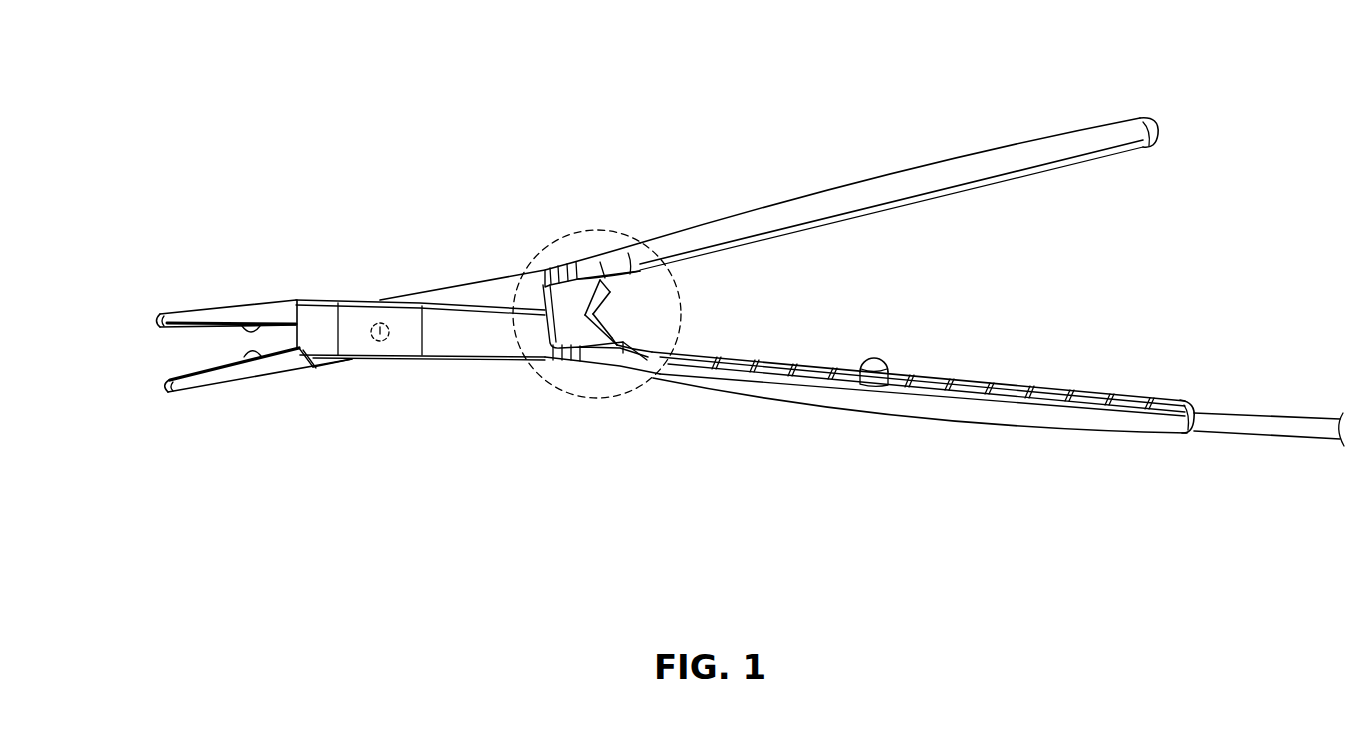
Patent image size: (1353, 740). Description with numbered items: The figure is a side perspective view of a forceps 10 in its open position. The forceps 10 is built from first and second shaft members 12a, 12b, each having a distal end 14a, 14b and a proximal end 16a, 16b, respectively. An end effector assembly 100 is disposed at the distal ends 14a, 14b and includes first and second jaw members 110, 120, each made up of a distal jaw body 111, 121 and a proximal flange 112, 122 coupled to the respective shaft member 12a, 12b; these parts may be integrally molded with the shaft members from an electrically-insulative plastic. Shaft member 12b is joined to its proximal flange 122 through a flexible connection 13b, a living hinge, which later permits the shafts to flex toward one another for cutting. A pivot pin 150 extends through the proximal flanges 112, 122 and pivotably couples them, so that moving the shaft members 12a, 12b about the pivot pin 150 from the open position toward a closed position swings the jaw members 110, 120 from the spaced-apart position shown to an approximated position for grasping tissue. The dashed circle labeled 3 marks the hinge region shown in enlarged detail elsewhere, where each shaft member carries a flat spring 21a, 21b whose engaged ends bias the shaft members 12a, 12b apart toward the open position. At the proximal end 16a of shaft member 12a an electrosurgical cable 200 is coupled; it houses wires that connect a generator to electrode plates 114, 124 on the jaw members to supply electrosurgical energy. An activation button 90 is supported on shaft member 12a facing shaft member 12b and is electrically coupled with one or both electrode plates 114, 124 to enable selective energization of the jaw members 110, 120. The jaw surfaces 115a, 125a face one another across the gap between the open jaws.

The forceps 10 is at (677, 116).
The first shaft member 12a is at (932, 432).
The second shaft member 12b is at (829, 164).
The flexible connection 13b is at (553, 270).
The distal end of first shaft member 14a is at (613, 373).
The distal end of second shaft member 14b is at (600, 260).
The proximal end of first shaft member 16a is at (1168, 428).
The proximal end of second shaft member 16b is at (1125, 122).
The first flat spring 21a is at (607, 323).
The second flat spring 21b is at (607, 295).
The activation button 90 is at (873, 353).
The end effector assembly 100 is at (342, 246).
The first jaw member 110 is at (137, 314).
The distal jaw body of first jaw member 111 is at (182, 306).
The proximal flange of first jaw member 112 is at (432, 335).
The electrode plate 114 is at (257, 327).
The first tissue contacting surface 115a is at (166, 329).
The second jaw member 120 is at (154, 393).
The distal jaw body of second jaw member 121 is at (217, 388).
The proximal flange of second jaw member 122 is at (477, 293).
The electrode plate 124 is at (267, 357).
The second tissue contacting surface 125a is at (182, 368).
The pivot pin 150 is at (380, 318).
The electrosurgical cable 200 is at (1260, 425).
The detail region shown in FIG. 3 is at (543, 380).